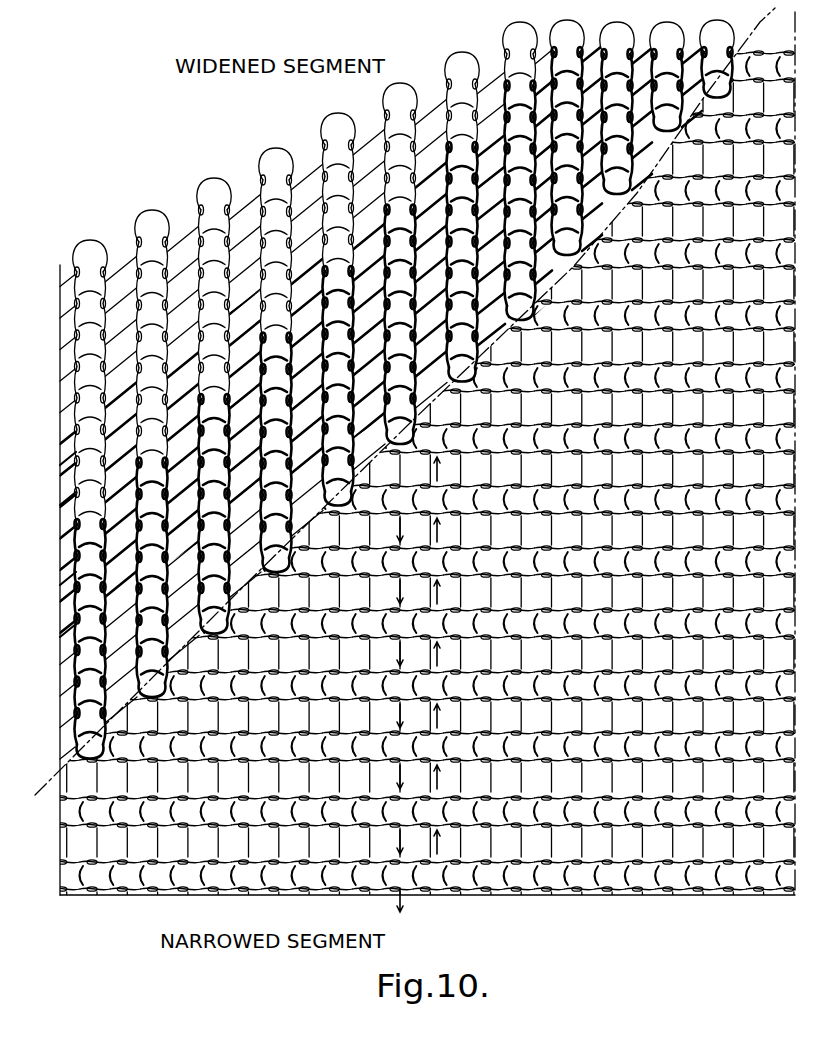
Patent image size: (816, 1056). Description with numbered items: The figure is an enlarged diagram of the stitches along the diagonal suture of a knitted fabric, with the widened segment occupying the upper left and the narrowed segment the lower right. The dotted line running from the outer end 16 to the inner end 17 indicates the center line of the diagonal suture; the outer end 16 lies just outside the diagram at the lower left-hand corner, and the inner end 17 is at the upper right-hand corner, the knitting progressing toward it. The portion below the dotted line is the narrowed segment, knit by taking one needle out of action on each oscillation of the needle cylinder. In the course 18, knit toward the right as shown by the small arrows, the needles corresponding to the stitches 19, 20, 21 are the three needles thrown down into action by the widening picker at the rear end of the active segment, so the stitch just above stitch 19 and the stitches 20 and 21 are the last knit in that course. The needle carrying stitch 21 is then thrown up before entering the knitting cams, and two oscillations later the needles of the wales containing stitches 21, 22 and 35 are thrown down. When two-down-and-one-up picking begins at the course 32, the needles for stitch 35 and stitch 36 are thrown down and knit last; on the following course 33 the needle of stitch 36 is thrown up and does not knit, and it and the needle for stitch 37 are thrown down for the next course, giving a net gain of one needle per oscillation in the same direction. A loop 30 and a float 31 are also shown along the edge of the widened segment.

The outer end of the diagonal suture 16 is at (78, 782).
The inner end of the diagonal suture 17 is at (735, 50).
The course 18 is at (62, 633).
The stitch 19 is at (328, 470).
The stitch 20 is at (388, 432).
The stitch 21 is at (449, 362).
The stitch 22 is at (509, 316).
The transfer loop 30 is at (96, 758).
The float yarn 31 is at (62, 583).
The course 32 is at (62, 503).
The course 33 is at (62, 463).
The stitch 35 is at (553, 262).
The stitch 36 is at (630, 168).
The stitch 37 is at (658, 93).